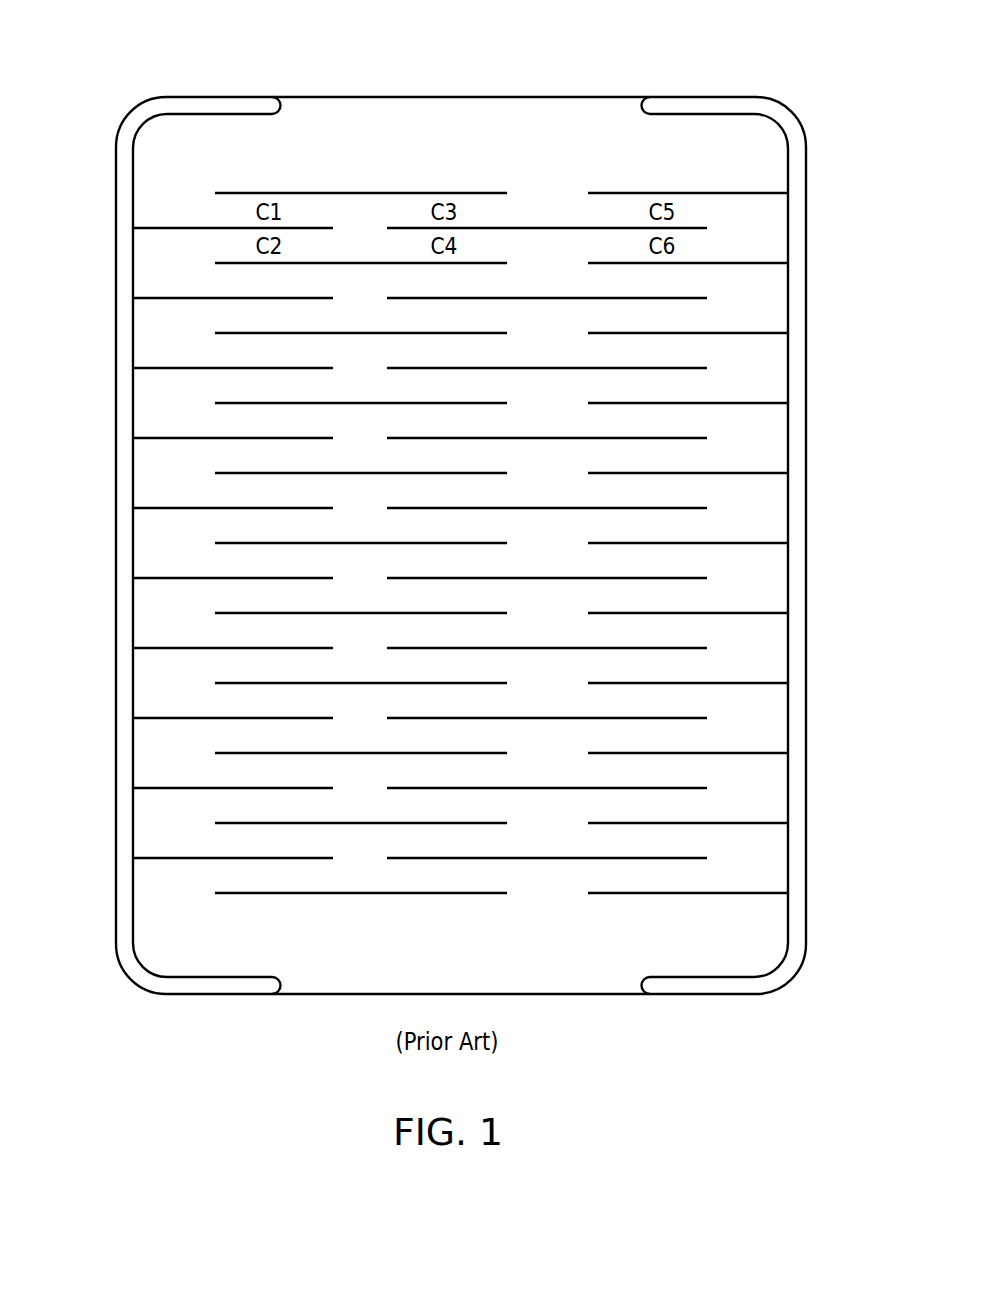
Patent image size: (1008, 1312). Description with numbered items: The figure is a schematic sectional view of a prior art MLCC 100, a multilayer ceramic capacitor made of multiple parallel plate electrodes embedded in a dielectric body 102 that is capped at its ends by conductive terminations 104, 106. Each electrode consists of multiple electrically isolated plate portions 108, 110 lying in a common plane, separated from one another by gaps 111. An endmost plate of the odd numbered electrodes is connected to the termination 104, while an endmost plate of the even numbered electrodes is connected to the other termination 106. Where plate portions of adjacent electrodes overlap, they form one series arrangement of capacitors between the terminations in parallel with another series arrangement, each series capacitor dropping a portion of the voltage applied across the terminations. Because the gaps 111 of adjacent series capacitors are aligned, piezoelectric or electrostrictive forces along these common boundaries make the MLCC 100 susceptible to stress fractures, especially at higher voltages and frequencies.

The MLCC 100 is at (130, 46).
The dielectric body 102 is at (531, 130).
The conductive termination 104 is at (800, 542).
The conductive termination 106 is at (124, 548).
The plate portion 108 is at (361, 193).
The plate portion 110 is at (690, 193).
The gap 111 is at (355, 861).